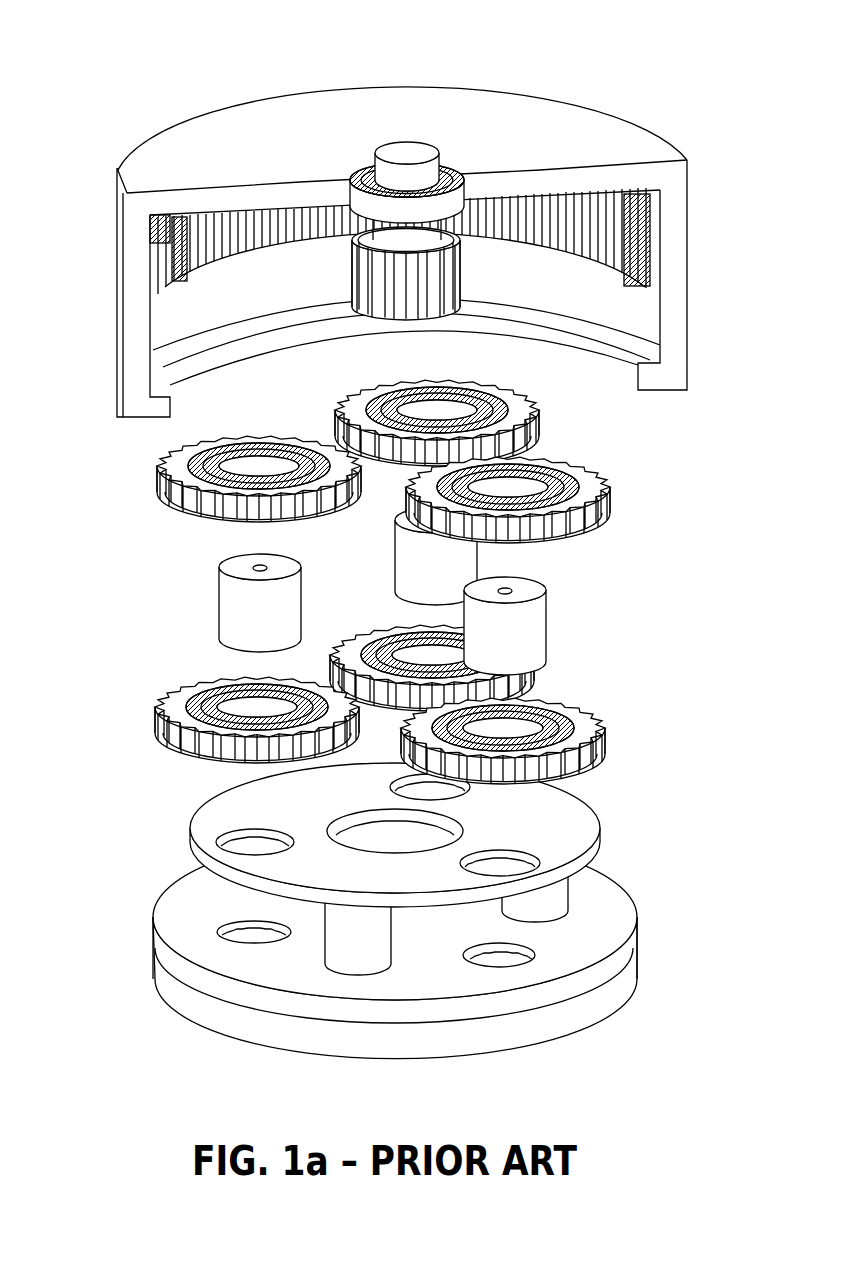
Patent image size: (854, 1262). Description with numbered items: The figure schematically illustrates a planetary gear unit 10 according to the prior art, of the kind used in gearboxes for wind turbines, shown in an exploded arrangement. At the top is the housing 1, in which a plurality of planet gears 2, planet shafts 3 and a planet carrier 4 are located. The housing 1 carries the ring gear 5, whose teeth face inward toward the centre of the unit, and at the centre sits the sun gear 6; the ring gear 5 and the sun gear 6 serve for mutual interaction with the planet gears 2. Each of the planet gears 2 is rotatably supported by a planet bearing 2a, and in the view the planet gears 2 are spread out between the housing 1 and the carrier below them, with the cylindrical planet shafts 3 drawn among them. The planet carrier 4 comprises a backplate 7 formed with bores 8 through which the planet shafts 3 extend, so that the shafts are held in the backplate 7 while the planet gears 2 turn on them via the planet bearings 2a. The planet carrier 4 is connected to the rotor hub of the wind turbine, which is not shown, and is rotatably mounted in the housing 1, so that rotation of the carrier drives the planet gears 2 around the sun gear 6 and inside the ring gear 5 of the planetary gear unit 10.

The housing 1 is at (400, 252).
The planet gears 2 is at (177, 690).
The planet bearings 2a is at (185, 470).
The planet shafts 3 is at (527, 640).
The planet carrier 4 is at (148, 873).
The ring gear 5 is at (580, 245).
The sun gear 6 is at (463, 278).
The backplate 7 is at (414, 835).
The bores 8 is at (243, 845).
The planetary gear unit 10 is at (627, 77).